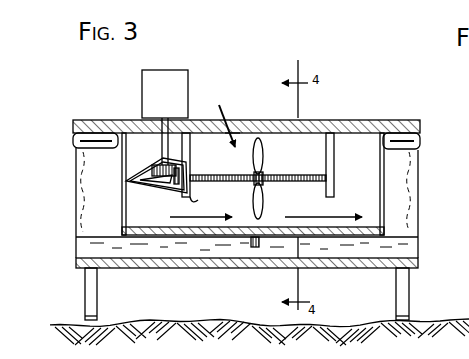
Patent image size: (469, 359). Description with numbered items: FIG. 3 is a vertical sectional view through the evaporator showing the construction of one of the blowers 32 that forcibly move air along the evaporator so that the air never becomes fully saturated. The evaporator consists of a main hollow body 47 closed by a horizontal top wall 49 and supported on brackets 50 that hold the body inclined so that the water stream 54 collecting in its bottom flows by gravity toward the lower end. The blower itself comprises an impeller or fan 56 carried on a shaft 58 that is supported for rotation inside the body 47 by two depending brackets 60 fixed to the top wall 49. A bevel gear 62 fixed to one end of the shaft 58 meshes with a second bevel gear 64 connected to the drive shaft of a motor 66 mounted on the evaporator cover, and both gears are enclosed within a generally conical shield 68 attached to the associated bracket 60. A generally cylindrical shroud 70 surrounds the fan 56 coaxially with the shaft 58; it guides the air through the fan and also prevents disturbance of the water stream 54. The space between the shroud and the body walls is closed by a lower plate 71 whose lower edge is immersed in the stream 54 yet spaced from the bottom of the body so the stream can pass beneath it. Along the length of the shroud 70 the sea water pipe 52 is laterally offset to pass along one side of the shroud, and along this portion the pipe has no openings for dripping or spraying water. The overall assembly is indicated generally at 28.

The apparatus housing 28 is at (85, 108).
The blower 32 is at (220, 115).
The main hollow body 47 is at (337, 124).
The top wall 49 is at (378, 121).
The brackets 50 is at (97, 299).
The sea water pipe 52 is at (105, 137).
The water stream 54 is at (410, 251).
The fan 56 is at (262, 154).
The shaft 58 is at (272, 186).
The depending brackets 60 is at (188, 164).
The bevel gear 62 is at (165, 197).
The bevel gear 64 is at (156, 168).
The motor 66 is at (180, 70).
The conical shield 68 is at (203, 201).
The shroud 70 is at (232, 121).
The lower plate 71 is at (260, 247).